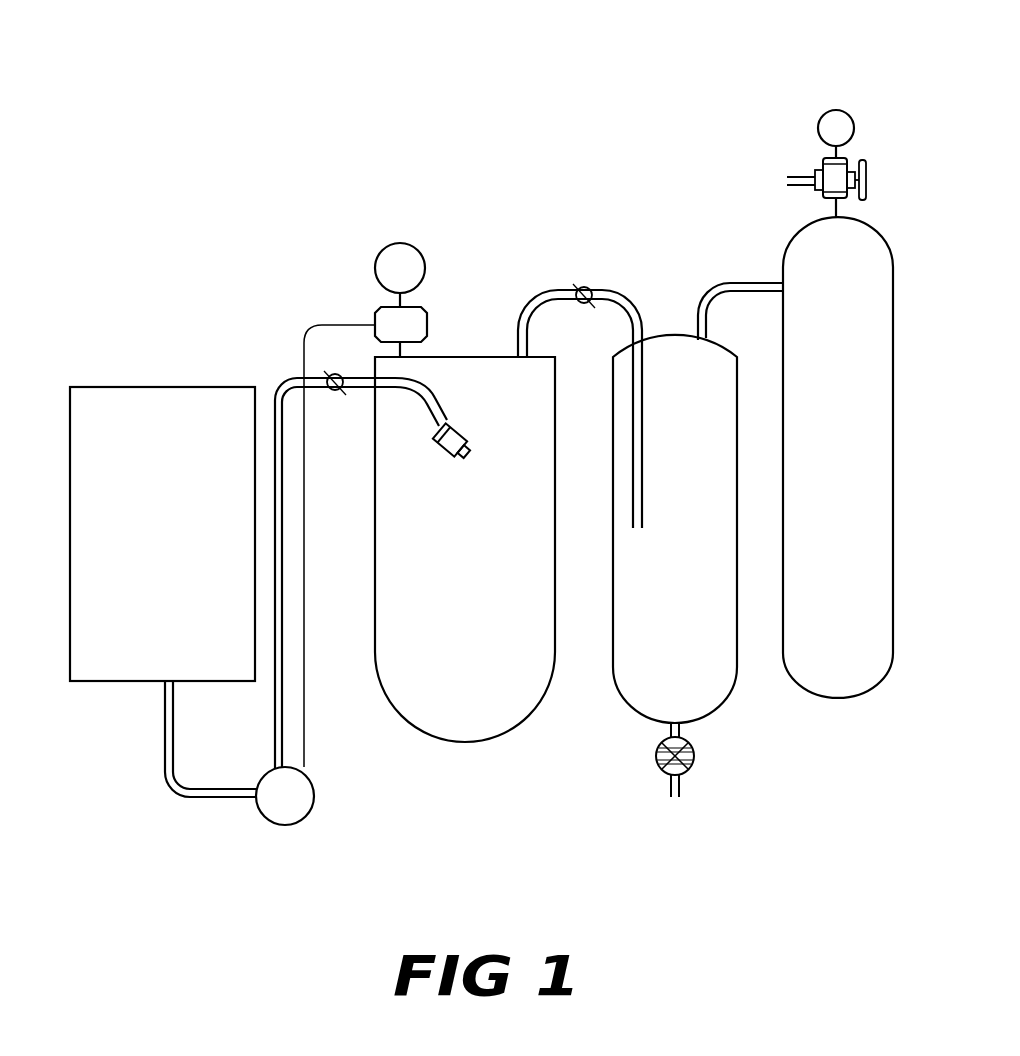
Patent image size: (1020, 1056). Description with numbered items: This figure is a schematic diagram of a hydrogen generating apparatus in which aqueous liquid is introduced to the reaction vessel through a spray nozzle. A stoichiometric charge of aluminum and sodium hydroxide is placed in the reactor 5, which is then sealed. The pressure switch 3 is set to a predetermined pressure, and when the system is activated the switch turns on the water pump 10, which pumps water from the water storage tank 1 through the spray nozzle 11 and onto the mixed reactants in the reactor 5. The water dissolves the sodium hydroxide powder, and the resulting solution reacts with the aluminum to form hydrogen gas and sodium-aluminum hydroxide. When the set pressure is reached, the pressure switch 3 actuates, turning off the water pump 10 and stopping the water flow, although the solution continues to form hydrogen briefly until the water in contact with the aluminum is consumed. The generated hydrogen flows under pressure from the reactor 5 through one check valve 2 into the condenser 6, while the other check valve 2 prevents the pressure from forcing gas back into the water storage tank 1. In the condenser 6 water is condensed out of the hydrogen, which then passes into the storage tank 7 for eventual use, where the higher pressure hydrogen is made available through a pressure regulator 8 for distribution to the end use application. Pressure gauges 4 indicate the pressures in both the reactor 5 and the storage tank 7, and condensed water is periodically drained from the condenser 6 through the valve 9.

The water storage tank 1 is at (107, 402).
The check valve 2 is at (330, 378).
The pressure switch 3 is at (385, 320).
The pressure gauge 4 is at (393, 268).
The reactor 5 is at (457, 387).
The condenser 6 is at (693, 362).
The storage tank 7 is at (802, 267).
The pressure regulator 8 is at (828, 168).
The valve 9 is at (695, 765).
The water pump 10 is at (300, 797).
The spray nozzle 11 is at (446, 447).